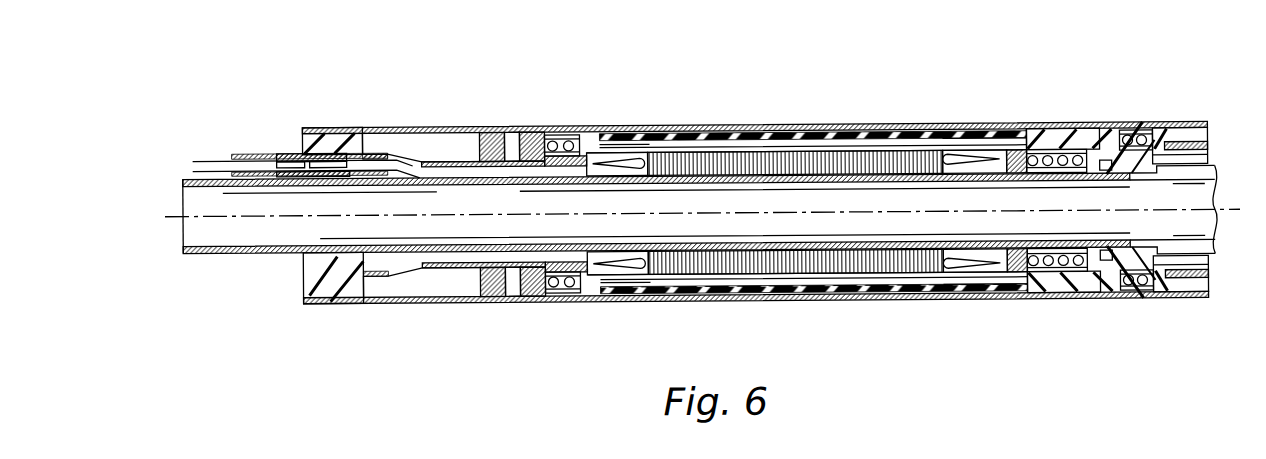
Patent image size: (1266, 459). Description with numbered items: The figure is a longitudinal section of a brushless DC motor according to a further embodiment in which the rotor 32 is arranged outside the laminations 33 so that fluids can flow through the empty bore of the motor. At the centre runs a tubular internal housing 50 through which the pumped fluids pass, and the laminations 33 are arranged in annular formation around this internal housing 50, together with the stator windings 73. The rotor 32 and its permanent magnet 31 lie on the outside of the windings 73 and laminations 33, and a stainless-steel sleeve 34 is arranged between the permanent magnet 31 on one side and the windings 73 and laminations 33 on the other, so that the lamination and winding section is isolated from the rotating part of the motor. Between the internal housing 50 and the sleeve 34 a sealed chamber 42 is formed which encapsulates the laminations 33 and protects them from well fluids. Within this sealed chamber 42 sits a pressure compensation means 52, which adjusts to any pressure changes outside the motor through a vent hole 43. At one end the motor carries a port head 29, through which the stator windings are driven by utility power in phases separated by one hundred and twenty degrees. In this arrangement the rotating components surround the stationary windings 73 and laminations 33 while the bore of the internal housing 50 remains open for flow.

The port head 29 is at (293, 153).
The sealed chamber 42 is at (420, 145).
The pressure compensation means 52 is at (472, 126).
The vent hole 43 is at (520, 126).
The sleeve 34 is at (920, 151).
The permanent magnet 31 is at (683, 280).
The laminations 33 is at (900, 264).
The rotor 32 is at (958, 145).
The stator windings 73 is at (988, 264).
The internal housing 50 is at (997, 149).